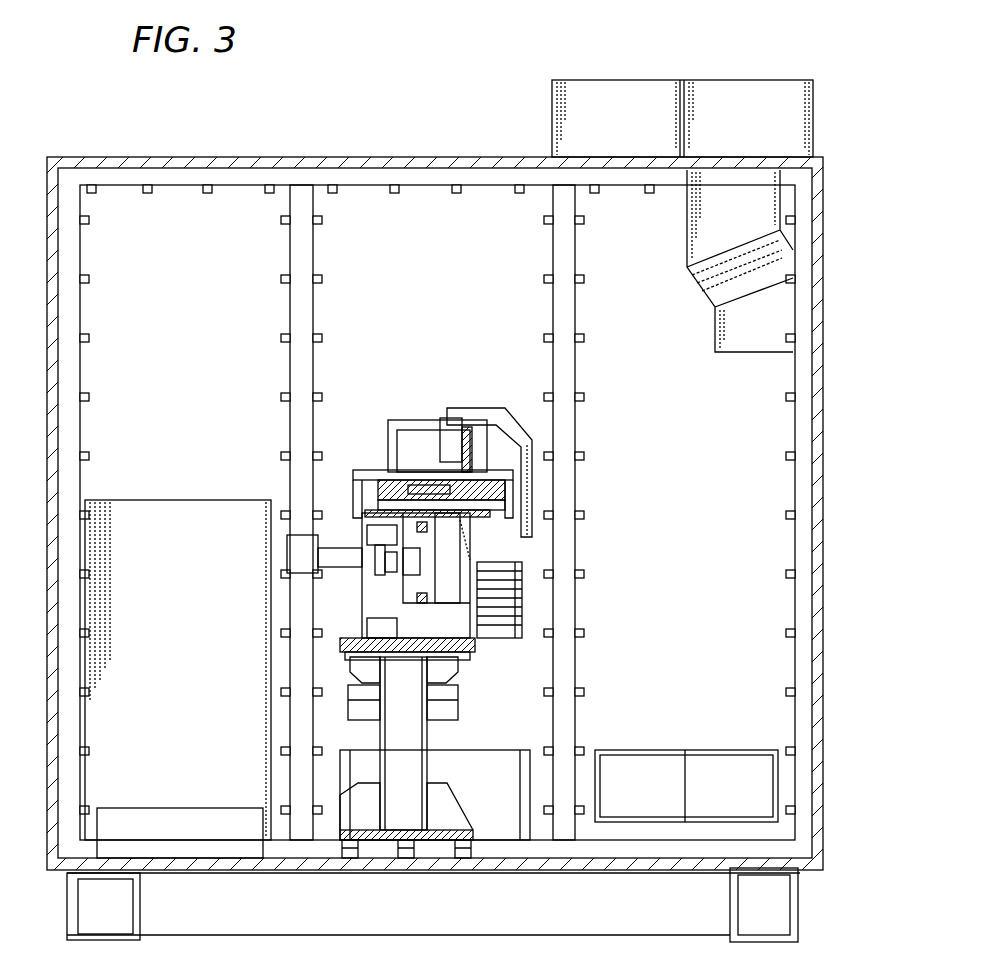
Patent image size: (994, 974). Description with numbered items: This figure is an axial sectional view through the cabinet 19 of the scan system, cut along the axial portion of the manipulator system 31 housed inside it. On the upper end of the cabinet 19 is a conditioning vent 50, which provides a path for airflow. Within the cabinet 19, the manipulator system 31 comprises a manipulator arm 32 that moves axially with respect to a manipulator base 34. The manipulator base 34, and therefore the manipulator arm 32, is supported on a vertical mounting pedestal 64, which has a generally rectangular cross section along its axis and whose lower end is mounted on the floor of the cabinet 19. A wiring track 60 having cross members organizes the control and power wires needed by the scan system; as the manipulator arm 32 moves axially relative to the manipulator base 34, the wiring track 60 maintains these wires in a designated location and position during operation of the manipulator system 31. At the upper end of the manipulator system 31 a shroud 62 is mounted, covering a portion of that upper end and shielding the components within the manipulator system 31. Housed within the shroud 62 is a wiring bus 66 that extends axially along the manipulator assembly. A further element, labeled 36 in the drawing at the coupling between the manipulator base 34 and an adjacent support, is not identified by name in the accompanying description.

The cabinet 19 is at (812, 540).
The conditioning vent 50 is at (753, 95).
The manipulator system 31 is at (385, 336).
The wiring bus 66 is at (455, 408).
The shroud 62 is at (533, 418).
The manipulator arm 32 is at (470, 540).
The manipulator base 34 is at (362, 612).
The shaft coupling 36 is at (338, 572).
The wiring track 60 is at (523, 602).
The vertical mounting pedestal 64 is at (430, 735).